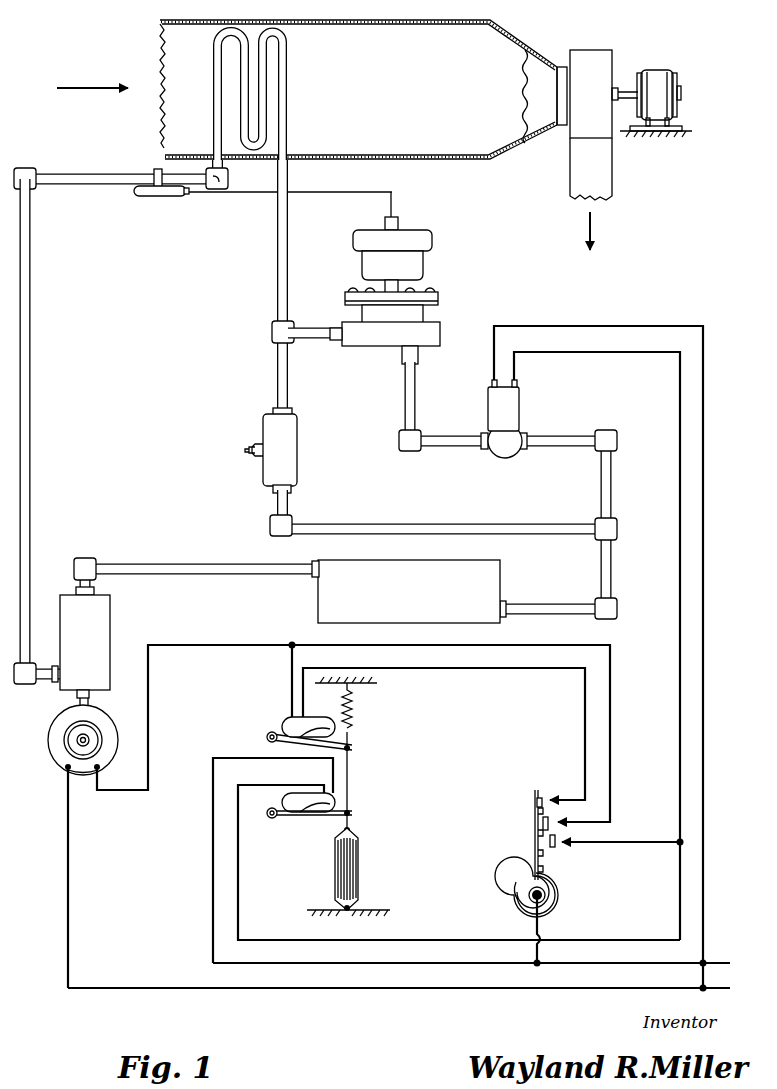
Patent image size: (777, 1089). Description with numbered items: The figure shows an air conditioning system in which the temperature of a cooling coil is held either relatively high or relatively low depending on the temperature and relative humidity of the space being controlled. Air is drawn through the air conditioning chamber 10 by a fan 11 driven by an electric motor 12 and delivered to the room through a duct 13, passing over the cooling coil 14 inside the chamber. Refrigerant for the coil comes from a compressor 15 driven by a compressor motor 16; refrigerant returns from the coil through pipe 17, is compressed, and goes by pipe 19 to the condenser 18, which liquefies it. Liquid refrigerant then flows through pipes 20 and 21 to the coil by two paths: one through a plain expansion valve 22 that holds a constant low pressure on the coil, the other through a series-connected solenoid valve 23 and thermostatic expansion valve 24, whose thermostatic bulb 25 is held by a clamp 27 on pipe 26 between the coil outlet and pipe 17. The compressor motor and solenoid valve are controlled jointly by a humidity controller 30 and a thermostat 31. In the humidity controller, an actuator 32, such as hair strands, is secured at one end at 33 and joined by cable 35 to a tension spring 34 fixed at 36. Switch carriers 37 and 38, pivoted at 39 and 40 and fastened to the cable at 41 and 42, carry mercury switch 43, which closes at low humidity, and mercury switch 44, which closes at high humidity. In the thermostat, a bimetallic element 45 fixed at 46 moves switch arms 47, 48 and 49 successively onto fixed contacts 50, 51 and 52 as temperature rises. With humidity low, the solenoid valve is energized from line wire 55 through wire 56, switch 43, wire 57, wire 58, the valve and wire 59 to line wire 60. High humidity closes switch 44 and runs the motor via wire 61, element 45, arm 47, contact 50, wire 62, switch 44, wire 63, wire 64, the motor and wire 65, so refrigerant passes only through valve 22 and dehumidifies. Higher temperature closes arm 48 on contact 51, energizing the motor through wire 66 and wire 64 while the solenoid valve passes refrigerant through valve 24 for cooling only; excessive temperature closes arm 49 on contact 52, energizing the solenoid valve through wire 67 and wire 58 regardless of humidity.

The air conditioning chamber 10 is at (436, 122).
The fan 11 is at (603, 111).
The electric motor 12 is at (676, 108).
The duct 13 is at (603, 181).
The cooling coil 14 is at (288, 63).
The compressor 15 is at (94, 636).
The compressor motor 16 is at (66, 743).
The pipe 17 is at (30, 489).
The condenser 18 is at (422, 582).
The pipe 19 is at (158, 566).
The pipe 20 is at (552, 606).
The pipe 21 is at (612, 572).
The plain expansion valve 22 is at (298, 434).
The solenoid valve 23 is at (508, 452).
The thermostatic expansion valve 24 is at (380, 339).
The thermostatic bulb 25 is at (172, 198).
The pipe 26 is at (99, 186).
The clamp 27 is at (158, 195).
The humidity controller 30 is at (339, 801).
The thermostat 31 is at (566, 838).
The actuator 32 is at (336, 855).
The fixed end 33 is at (350, 911).
The tension spring 34 is at (356, 716).
The cable 35 is at (350, 788).
The fixed point 36 is at (372, 683).
The switch carrier 37 is at (351, 827).
The switch carrier 38 is at (352, 745).
The pivot 39 is at (272, 819).
The pivot 40 is at (268, 734).
The attachment point 41 is at (350, 815).
The attachment point 42 is at (350, 752).
The mercury switch 43 is at (282, 802).
The mercury switch 44 is at (302, 724).
The bimetallic element 45 is at (514, 893).
The fixed end 46 is at (534, 892).
The switch arm 47 is at (536, 799).
The switch arm 48 is at (550, 817).
The switch arm 49 is at (552, 850).
The fixed contact 50 is at (548, 797).
The fixed contact 51 is at (562, 826).
The fixed contact 52 is at (568, 844).
The line wire 55 is at (712, 963).
The wire 56 is at (212, 903).
The wire 57 is at (240, 898).
The wire 58 is at (678, 618).
The wire 59 is at (704, 676).
The line wire 60 is at (704, 988).
The wire 61 is at (540, 928).
The wire 62 is at (520, 670).
The wire 63 is at (290, 662).
The wire 64 is at (149, 708).
The wire 65 is at (68, 912).
The wire 66 is at (611, 742).
The wire 67 is at (631, 840).